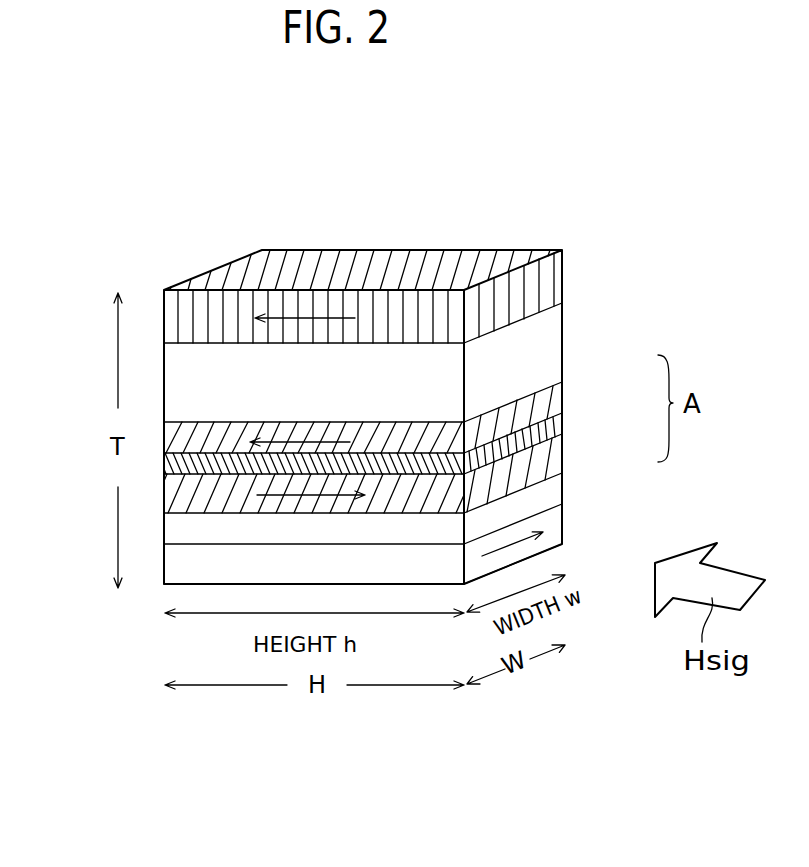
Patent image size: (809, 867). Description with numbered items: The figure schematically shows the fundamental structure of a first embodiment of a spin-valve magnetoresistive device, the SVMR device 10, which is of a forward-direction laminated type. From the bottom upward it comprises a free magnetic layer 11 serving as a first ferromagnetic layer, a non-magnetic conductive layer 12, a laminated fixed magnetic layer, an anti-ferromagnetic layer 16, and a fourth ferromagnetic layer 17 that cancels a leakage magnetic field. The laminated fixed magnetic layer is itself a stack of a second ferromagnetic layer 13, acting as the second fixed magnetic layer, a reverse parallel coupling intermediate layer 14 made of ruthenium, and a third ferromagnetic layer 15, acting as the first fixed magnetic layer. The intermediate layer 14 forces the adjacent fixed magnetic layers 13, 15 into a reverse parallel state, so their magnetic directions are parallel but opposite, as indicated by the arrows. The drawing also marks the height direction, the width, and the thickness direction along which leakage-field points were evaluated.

The SVMR device 10 is at (590, 157).
The free magnetic layer 11 is at (553, 533).
The non-magnetic conductive layer 12 is at (553, 497).
The second ferromagnetic layer 13 is at (553, 457).
The reverse parallel coupling intermediate layer 14 is at (553, 422).
The third ferromagnetic layer 15 is at (553, 390).
The anti-ferromagnetic layer 16 is at (553, 343).
The fourth ferromagnetic layer 17 is at (553, 283).